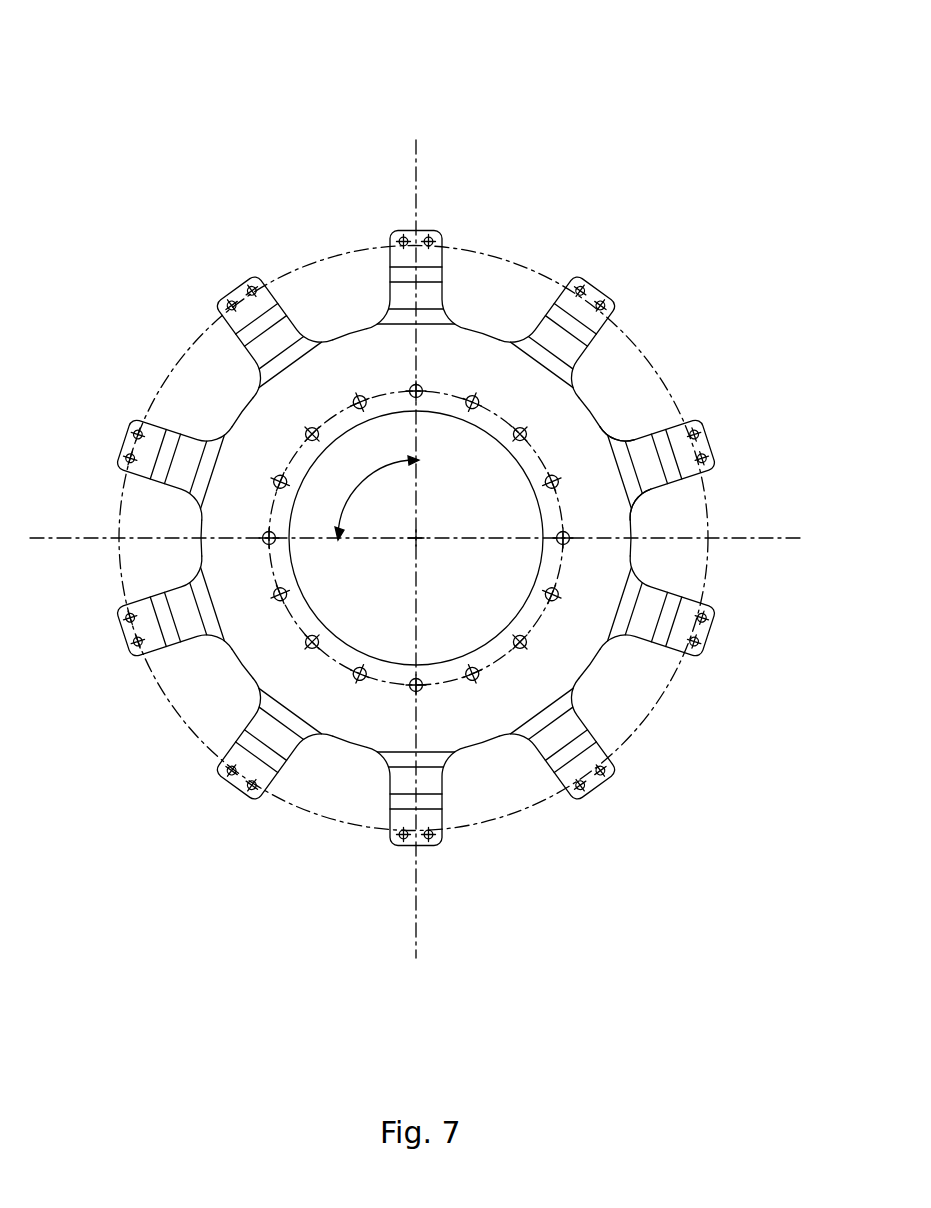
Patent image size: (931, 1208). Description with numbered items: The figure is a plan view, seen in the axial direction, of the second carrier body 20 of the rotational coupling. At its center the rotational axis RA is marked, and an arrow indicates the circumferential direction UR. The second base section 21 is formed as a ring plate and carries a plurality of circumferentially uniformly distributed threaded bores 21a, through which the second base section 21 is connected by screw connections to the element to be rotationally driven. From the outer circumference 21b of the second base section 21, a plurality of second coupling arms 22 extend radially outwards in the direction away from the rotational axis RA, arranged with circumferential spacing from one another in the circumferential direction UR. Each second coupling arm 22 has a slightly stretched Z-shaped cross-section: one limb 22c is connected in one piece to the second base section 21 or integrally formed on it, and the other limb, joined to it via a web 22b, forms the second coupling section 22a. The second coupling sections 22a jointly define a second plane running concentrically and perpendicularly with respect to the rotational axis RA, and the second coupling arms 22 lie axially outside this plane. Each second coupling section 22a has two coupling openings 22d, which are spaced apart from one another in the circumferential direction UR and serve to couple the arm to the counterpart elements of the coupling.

The second carrier body 20 is at (683, 137).
The second base section 21 is at (560, 422).
The threaded bores 21a is at (359, 686).
The outer circumference 21b is at (238, 663).
The second coupling arms 22 is at (555, 297).
The second coupling section 22a is at (706, 436).
The web 22b is at (645, 483).
The limb 22c is at (617, 437).
The coupling openings 22d is at (608, 772).
The circumferential direction UR is at (377, 498).
The rotational axis RA is at (424, 544).